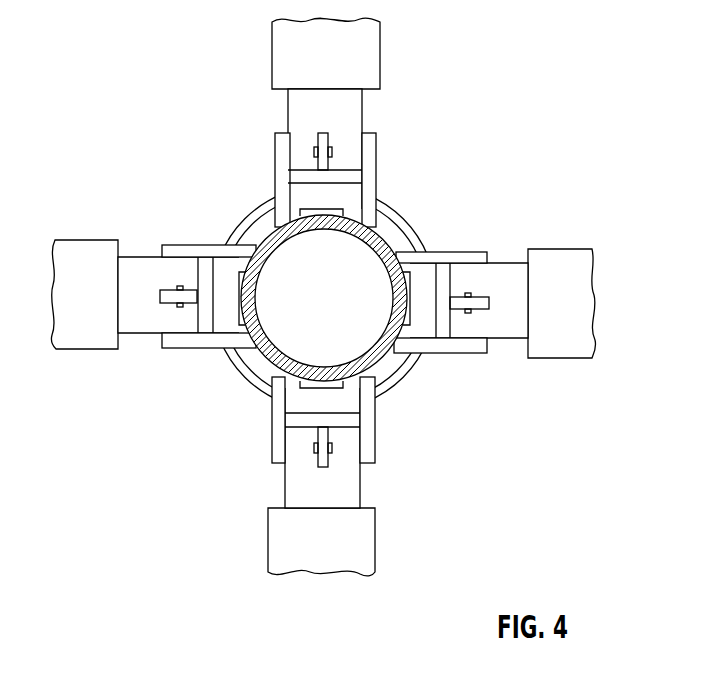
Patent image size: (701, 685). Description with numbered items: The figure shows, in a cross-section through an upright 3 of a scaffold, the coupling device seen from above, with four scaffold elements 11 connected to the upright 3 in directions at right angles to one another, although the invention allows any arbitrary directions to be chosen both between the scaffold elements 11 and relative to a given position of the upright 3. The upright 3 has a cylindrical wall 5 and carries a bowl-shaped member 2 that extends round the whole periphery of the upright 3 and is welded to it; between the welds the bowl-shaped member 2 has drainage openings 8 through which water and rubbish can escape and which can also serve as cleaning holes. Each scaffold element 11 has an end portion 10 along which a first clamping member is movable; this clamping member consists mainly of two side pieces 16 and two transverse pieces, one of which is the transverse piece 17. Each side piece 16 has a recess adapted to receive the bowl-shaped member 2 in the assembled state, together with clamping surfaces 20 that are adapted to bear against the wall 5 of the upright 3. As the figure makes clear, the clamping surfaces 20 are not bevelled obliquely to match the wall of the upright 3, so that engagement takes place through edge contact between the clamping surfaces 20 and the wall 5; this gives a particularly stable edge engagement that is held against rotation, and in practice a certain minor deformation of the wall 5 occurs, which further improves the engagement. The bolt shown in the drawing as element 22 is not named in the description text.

The bowl-shaped member 2 is at (414, 376).
The upright 3 is at (377, 238).
The cylindrical wall 5 is at (253, 220).
The drainage openings 8 is at (382, 363).
The end portion 10 is at (139, 292).
The scaffold element 11 is at (54, 234).
The side pieces 16 is at (207, 340).
The transverse piece 17 is at (207, 316).
The clamping surface 20 is at (262, 367).
The bolt 22 is at (178, 303).